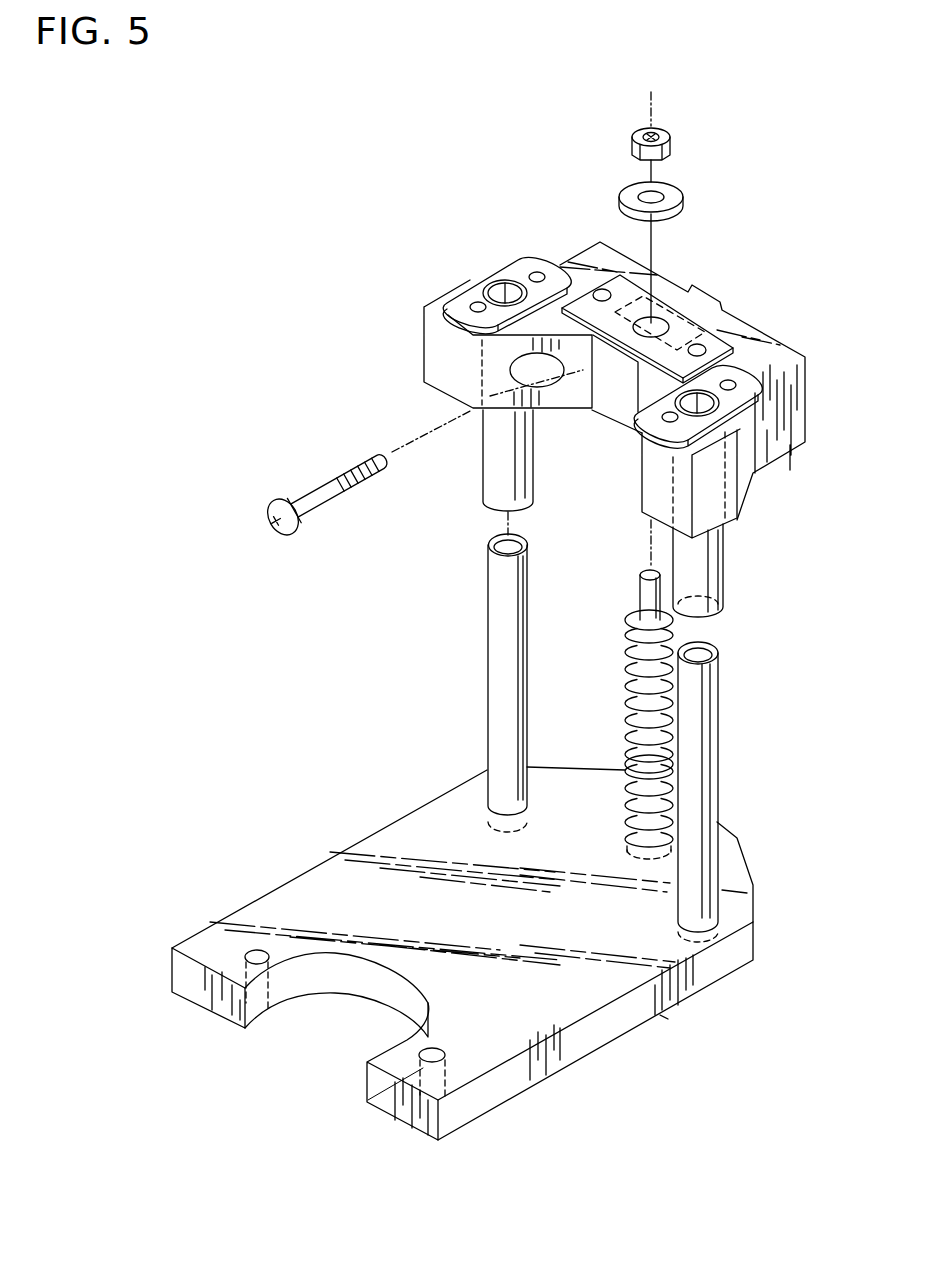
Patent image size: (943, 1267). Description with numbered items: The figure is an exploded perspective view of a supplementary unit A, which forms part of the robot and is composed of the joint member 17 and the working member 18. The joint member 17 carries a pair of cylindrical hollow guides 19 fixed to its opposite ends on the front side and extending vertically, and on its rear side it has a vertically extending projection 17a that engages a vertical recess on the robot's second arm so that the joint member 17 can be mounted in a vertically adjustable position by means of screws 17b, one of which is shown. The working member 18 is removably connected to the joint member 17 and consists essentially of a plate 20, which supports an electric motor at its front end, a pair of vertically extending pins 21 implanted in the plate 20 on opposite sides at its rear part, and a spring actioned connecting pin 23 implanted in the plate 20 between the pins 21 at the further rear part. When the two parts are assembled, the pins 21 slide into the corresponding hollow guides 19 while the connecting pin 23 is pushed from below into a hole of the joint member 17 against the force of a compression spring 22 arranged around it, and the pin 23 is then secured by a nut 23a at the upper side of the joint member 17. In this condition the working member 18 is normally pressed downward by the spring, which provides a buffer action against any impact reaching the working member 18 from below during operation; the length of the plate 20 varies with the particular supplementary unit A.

The joint member 17 is at (784, 437).
The projection 17a is at (725, 310).
The screw 17b is at (322, 486).
The working member 18 is at (462, 953).
The cylindrical hollow guide 19 is at (493, 468).
The plate 20 is at (592, 1032).
The pin 21 is at (495, 680).
The compression spring 22 is at (625, 705).
The spring actioned connecting pin 23 is at (639, 592).
The nut 23a is at (670, 141).
The supplementary unit A is at (662, 1017).